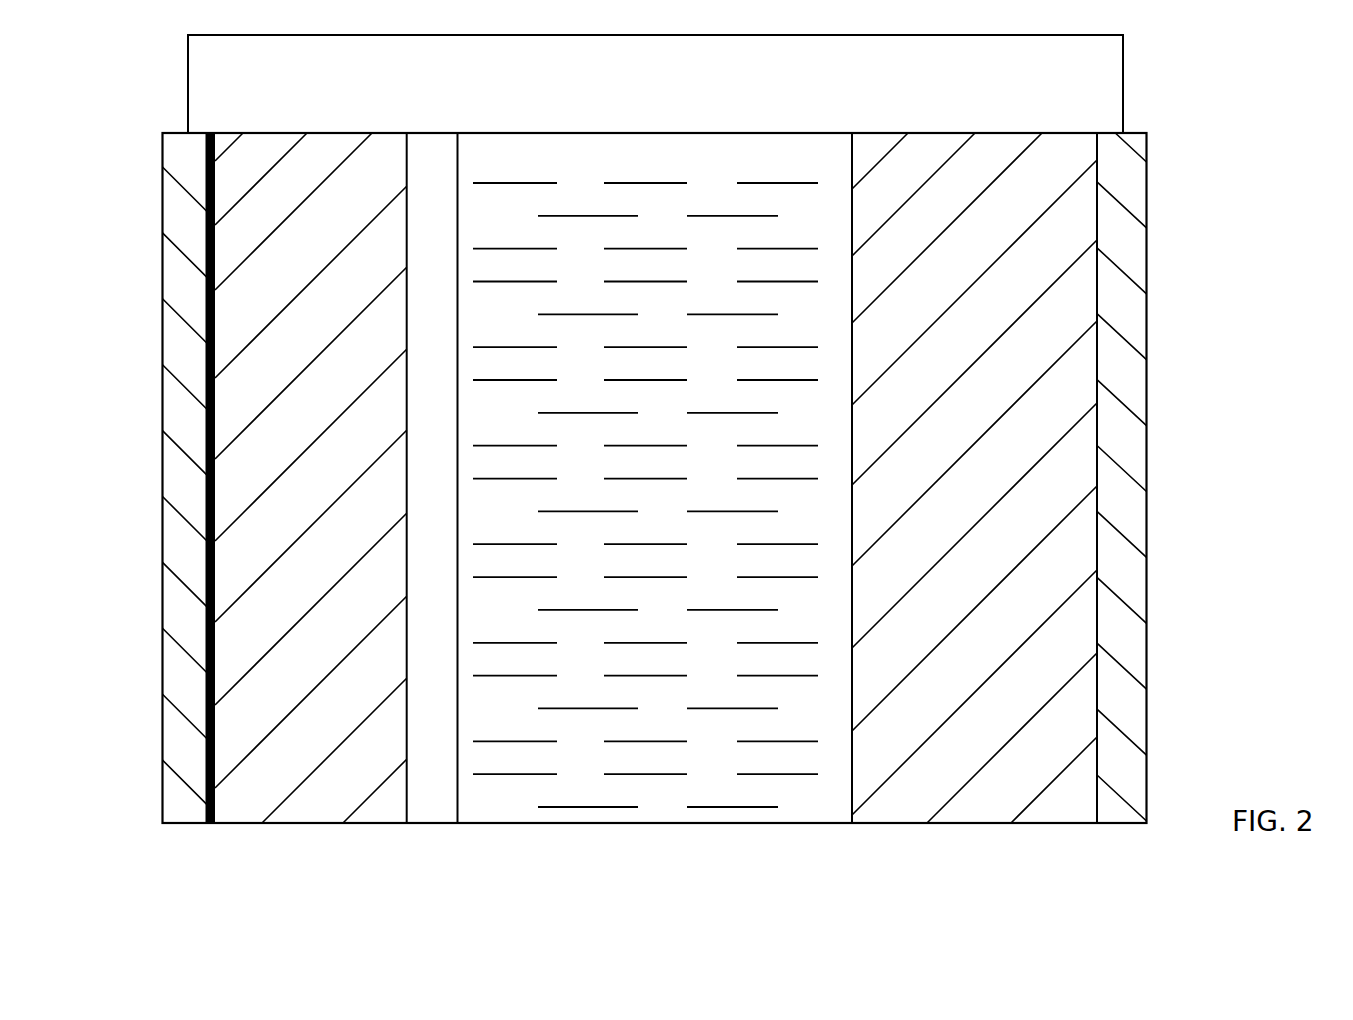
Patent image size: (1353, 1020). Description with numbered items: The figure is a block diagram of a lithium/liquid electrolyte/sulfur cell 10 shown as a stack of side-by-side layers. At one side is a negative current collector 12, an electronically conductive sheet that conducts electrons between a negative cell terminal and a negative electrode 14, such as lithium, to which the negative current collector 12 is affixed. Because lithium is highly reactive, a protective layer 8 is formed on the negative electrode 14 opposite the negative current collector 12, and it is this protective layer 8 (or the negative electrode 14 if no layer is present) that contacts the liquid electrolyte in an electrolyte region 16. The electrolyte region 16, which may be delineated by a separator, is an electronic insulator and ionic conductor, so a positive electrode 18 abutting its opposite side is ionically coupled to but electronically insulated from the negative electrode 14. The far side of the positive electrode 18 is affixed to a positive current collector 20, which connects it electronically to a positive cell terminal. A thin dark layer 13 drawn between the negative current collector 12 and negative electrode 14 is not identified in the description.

The cell 10 is at (1198, 93).
The negative current collector 12 is at (180, 542).
The protective layer 13 is at (205, 823).
The negative electrode 14 is at (303, 807).
The protective layer 8 is at (437, 805).
The electrolyte region 16 is at (660, 803).
The positive electrode 18 is at (982, 805).
The positive current collector 20 is at (1139, 585).